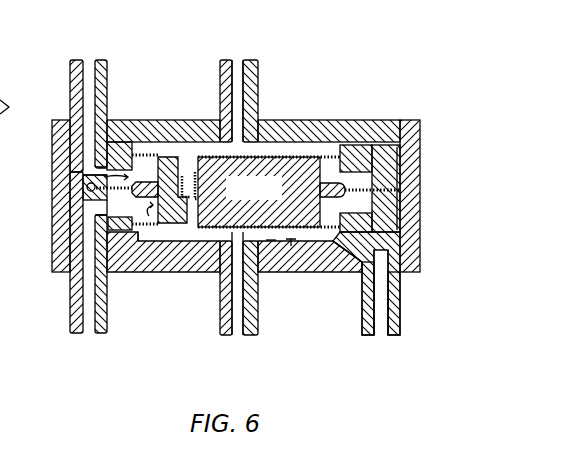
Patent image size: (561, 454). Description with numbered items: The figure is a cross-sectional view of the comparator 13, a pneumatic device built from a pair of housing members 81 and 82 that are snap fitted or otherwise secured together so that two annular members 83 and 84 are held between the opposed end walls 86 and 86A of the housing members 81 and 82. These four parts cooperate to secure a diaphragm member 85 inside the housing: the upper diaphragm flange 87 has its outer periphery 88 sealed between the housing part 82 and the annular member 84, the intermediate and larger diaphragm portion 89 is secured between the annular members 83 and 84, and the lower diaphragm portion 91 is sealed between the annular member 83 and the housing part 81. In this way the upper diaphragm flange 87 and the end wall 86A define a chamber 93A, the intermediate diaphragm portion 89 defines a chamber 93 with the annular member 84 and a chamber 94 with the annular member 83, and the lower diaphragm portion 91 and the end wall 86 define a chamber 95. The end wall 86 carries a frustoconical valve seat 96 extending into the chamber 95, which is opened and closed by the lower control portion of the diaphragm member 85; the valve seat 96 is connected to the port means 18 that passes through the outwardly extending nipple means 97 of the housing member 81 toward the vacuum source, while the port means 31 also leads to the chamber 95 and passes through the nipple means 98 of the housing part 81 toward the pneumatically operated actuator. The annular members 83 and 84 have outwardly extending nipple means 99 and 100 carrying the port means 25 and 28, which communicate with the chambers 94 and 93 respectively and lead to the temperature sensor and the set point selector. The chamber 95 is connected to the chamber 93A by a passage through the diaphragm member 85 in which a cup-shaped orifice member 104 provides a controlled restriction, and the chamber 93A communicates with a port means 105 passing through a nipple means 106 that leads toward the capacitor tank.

The housing member 82 is at (409, 122).
The nipple means 100 is at (70, 78).
The nipple means 99 is at (73, 308).
The port means 28 is at (88, 82).
The port means 25 is at (88, 307).
The chamber 93 is at (92, 178).
The intermediate diaphragm portion 89 is at (117, 192).
The outer periphery 88 is at (113, 157).
The upper diaphragm flange 87 is at (176, 157).
The cup-shaped orifice member 104 is at (298, 192).
The diaphragm member 85 is at (273, 150).
The chamber 93A is at (310, 146).
The end wall 86A is at (367, 143).
The annular member 83 is at (399, 199).
The annular member 84 is at (398, 167).
The nipple means 106 is at (222, 85).
The port means 105 is at (237, 82).
The nipple means 97 is at (221, 328).
The port means 18 is at (238, 313).
The end wall 86 is at (404, 260).
The comparator 13 is at (411, 232).
The housing member 81 is at (403, 278).
The nipple means 98 is at (367, 314).
The port means 31 is at (381, 310).
The chamber 95 is at (291, 241).
The frustoconical valve seat 96 is at (271, 245).
The chamber 94 is at (160, 233).
The lower diaphragm portion 91 is at (150, 237).